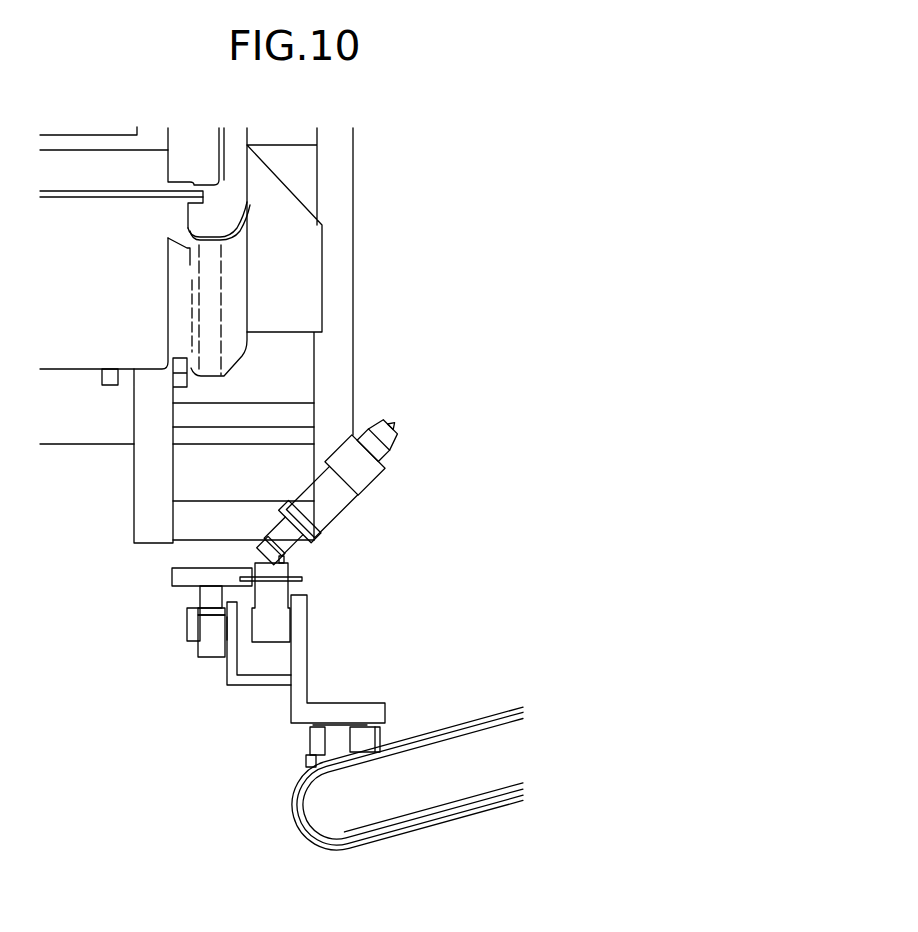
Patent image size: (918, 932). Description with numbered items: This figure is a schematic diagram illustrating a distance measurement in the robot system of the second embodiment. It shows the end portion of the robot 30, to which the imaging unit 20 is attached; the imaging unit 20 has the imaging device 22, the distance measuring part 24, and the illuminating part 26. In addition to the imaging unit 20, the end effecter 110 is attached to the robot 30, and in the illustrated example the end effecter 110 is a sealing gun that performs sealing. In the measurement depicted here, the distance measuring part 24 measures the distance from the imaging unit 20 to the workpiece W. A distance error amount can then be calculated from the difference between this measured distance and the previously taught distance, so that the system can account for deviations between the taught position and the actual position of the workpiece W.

The workpiece W is at (354, 167).
The end effecter 110 is at (373, 488).
The illuminating part 26 is at (172, 577).
The distance measuring part 24 is at (187, 622).
The imaging device 22 is at (210, 652).
The imaging unit 20 is at (253, 697).
The robot 30 is at (423, 833).